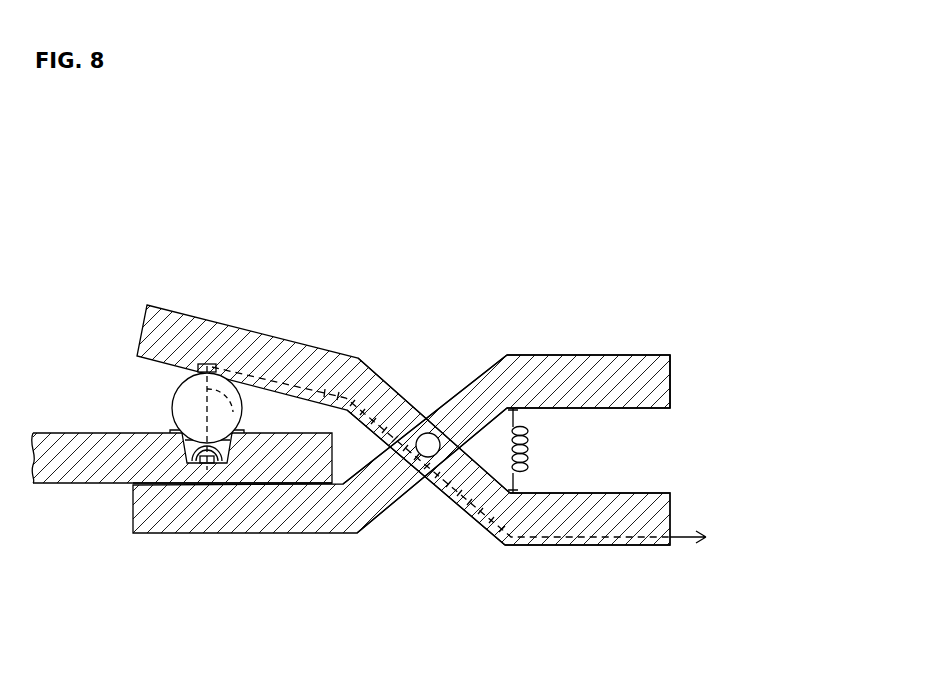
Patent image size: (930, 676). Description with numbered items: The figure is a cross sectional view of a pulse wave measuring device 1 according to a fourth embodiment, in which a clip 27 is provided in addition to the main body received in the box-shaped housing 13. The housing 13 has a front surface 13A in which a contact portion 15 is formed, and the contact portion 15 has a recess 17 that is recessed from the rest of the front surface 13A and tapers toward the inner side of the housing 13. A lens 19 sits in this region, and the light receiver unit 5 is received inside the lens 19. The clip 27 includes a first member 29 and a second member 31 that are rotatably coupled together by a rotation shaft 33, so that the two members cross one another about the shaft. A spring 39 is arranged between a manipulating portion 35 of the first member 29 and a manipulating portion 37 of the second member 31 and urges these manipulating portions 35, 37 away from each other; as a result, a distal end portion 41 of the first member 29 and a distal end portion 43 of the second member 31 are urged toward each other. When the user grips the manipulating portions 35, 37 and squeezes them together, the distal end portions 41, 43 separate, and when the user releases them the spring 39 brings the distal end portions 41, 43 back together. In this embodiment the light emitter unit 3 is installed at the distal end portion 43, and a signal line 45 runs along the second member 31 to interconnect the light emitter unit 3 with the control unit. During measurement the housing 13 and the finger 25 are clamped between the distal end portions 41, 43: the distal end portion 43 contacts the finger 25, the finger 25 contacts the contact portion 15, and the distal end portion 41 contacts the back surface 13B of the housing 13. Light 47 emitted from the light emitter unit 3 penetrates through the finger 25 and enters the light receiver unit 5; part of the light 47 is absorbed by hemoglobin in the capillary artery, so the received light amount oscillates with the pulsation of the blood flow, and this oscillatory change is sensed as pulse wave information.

The pulse wave measuring device 1 is at (684, 258).
The light emitter unit 3 is at (214, 362).
The light receiver unit 5 is at (207, 466).
The housing 13 is at (64, 440).
The front surface 13A is at (106, 433).
The back surface 13B is at (65, 485).
The contact portion 15 is at (168, 445).
The recess 17 is at (245, 440).
The lens 19 is at (190, 428).
The finger 25 is at (192, 396).
The clip 27 is at (672, 377).
The first member 29 is at (500, 396).
The second member 31 is at (477, 523).
The rotation shaft 33 is at (427, 445).
The manipulating portion 35 is at (612, 375).
The manipulating portion 37 is at (597, 537).
The spring 39 is at (530, 442).
The distal end portion 41 is at (240, 535).
The distal end portion 43 is at (237, 333).
The signal line 45 is at (323, 393).
The light 47 is at (238, 406).